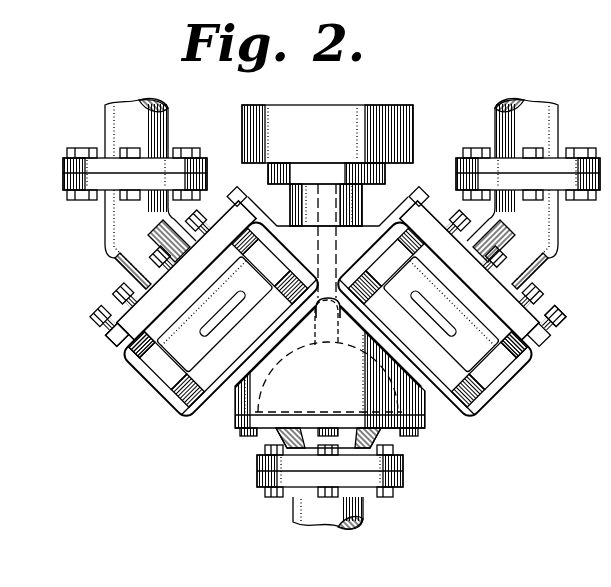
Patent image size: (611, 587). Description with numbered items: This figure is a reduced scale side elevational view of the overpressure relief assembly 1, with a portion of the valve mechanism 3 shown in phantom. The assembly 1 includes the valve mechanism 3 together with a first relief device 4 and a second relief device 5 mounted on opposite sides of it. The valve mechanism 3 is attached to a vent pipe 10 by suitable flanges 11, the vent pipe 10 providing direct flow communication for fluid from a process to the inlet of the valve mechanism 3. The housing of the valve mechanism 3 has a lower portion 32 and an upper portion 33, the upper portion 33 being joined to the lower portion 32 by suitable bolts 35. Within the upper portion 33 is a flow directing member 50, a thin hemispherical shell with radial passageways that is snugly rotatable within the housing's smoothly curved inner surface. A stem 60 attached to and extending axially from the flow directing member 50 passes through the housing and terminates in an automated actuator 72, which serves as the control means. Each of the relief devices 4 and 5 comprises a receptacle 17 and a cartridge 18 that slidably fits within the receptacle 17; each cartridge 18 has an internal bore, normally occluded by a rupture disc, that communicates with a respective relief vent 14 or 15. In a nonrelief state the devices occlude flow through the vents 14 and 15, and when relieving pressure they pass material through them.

The overpressure relief assembly 1 is at (565, 256).
The valve mechanism 3 is at (226, 414).
The first relief device 4 is at (146, 388).
The second relief device 5 is at (505, 397).
The vent pipe 10 is at (364, 516).
The flanges 11 is at (258, 484).
The relief vent 14 is at (104, 241).
The relief vent 15 is at (560, 216).
The receptacle 17 is at (112, 347).
The cartridge 18 is at (133, 364).
The lower portion 32 is at (383, 432).
The upper portion 33 is at (425, 400).
The bolts 35 is at (420, 437).
The flow directing member 50 is at (232, 428).
The stem 60 is at (338, 263).
The automated actuator 72 is at (409, 106).